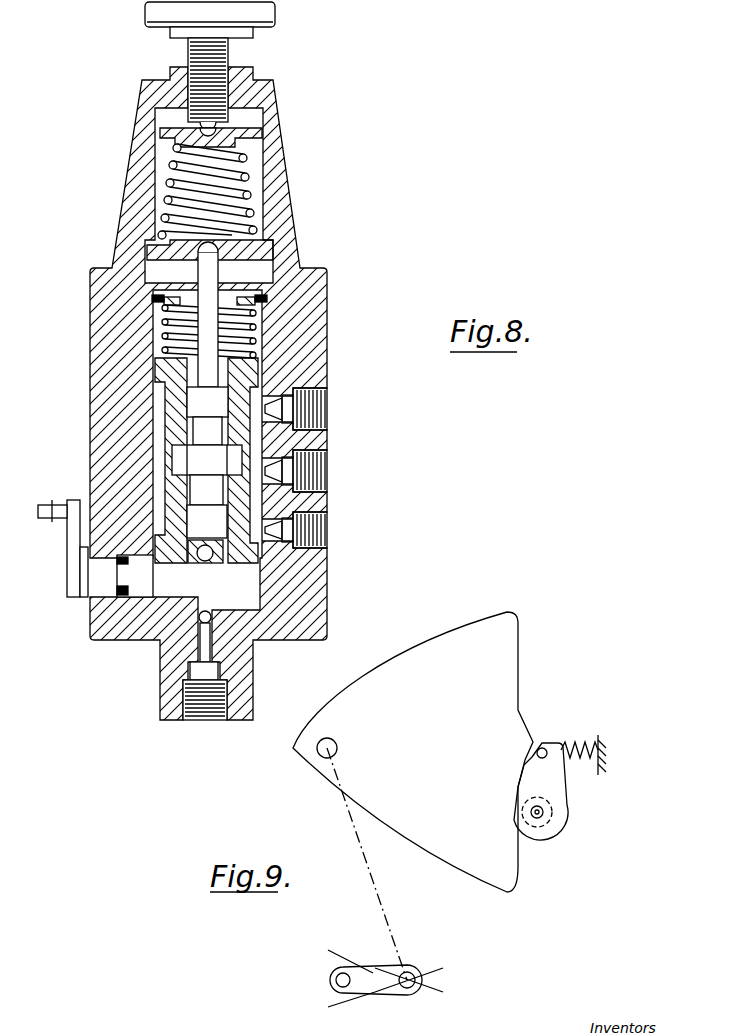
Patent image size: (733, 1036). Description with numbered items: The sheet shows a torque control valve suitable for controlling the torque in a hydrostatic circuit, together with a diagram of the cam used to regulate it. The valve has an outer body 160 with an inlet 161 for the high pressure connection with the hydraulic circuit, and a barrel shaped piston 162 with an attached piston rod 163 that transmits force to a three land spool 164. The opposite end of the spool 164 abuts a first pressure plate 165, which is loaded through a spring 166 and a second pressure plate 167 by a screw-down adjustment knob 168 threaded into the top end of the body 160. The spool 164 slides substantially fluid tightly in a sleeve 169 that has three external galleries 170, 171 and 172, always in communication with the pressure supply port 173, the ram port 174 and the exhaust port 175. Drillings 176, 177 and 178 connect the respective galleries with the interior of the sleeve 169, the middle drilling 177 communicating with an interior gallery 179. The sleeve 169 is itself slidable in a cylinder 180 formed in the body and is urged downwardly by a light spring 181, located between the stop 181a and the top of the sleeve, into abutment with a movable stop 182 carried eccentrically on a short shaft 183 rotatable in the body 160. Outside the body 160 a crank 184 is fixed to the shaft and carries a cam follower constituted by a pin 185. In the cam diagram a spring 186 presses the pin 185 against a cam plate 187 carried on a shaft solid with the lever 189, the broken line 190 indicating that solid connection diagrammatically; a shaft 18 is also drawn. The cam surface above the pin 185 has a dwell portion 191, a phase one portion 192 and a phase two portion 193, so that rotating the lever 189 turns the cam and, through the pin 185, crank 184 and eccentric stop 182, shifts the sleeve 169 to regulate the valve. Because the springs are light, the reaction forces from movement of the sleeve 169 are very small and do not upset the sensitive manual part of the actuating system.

In FIG. 8, the outer body 160 is at (310, 348).
In FIG. 8, the inlet 161 is at (183, 688).
In FIG. 8, the barrel shaped piston 162 is at (200, 623).
In FIG. 8, the piston rod 163 is at (250, 577).
In FIG. 8, the three land spool 164 is at (300, 388).
In FIG. 8, the first pressure plate 165 is at (232, 235).
In FIG. 8, the spring 166 is at (247, 160).
In FIG. 8, the second pressure plate 167 is at (217, 125).
In FIG. 8, the screw-down adjustment knob 168 is at (217, 92).
In FIG. 8, the sleeve 169 is at (157, 363).
In FIG. 8, the external gallery 170 is at (158, 517).
In FIG. 8, the external gallery 171 is at (155, 422).
In FIG. 8, the external gallery 172 is at (155, 385).
In FIG. 8, the pressure supply port 173 is at (303, 523).
In FIG. 8, the ram port 174 is at (328, 463).
In FIG. 8, the exhaust port 175 is at (328, 428).
In FIG. 8, the drilling 176 is at (320, 527).
In FIG. 8, the middle drilling 177 is at (328, 483).
In FIG. 8, the drilling 178 is at (328, 415).
In FIG. 8, the interior gallery 179 is at (173, 458).
In FIG. 8, the cylinder 180 is at (257, 345).
In FIG. 8, the light spring 181 is at (254, 318).
In FIG. 8, the stop 181a is at (257, 304).
In FIG. 8, the movable stop 182 is at (112, 580).
In FIG. 9, the movable stop 182 is at (530, 813).
In FIG. 8, the short shaft 183 is at (160, 573).
In FIG. 8, the crank 184 is at (73, 565).
In FIG. 9, the crank 184 is at (550, 788).
In FIG. 8, the pin 185 is at (68, 537).
In FIG. 9, the pin 185 is at (532, 758).
In FIG. 9, the spring 186 is at (567, 745).
In FIG. 9, the cam plate 187 is at (388, 778).
In FIG. 9, the lever 189 is at (373, 977).
In FIG. 9, the broken line 190 is at (353, 827).
In FIG. 9, the dwell portion 191 is at (536, 750).
In FIG. 9, the phase 1 portion 192 is at (523, 723).
In FIG. 9, the phase 2 portion 193 is at (518, 678).
In FIG. 9, the shaft 18 is at (320, 751).